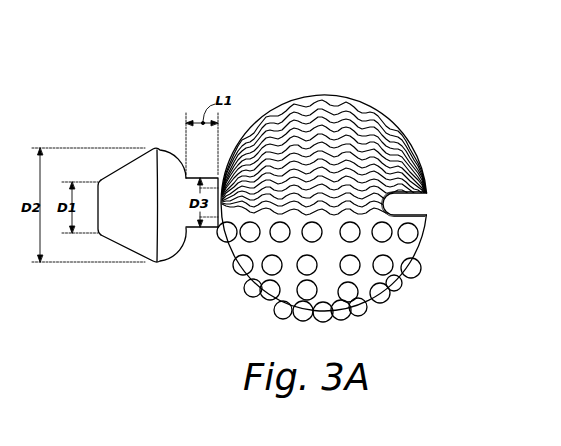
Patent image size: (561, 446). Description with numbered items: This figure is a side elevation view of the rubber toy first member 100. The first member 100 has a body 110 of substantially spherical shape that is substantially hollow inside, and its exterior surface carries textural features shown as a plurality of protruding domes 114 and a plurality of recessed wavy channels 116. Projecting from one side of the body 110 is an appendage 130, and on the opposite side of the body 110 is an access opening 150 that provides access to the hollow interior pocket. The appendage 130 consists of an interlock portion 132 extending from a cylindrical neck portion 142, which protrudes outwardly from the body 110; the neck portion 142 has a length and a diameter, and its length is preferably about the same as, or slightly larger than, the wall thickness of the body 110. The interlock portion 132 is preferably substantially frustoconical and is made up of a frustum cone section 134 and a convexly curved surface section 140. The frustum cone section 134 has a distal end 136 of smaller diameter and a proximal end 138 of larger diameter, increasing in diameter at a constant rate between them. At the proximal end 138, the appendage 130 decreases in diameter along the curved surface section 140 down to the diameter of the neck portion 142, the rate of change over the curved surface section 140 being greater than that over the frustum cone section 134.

The first member 100 is at (408, 86).
The body 110 is at (293, 98).
The protruding domes 114 is at (341, 317).
The recessed wavy channels 116 is at (365, 147).
The appendage 130 is at (137, 140).
The interlock portion 132 is at (115, 245).
The frustum cone section 134 is at (140, 232).
The distal end 136 is at (97, 192).
The proximal end 138 is at (157, 148).
The convexly curved surface section 140 is at (183, 252).
The cylindrical neck portion 142 is at (205, 233).
The access opening 150 is at (423, 203).